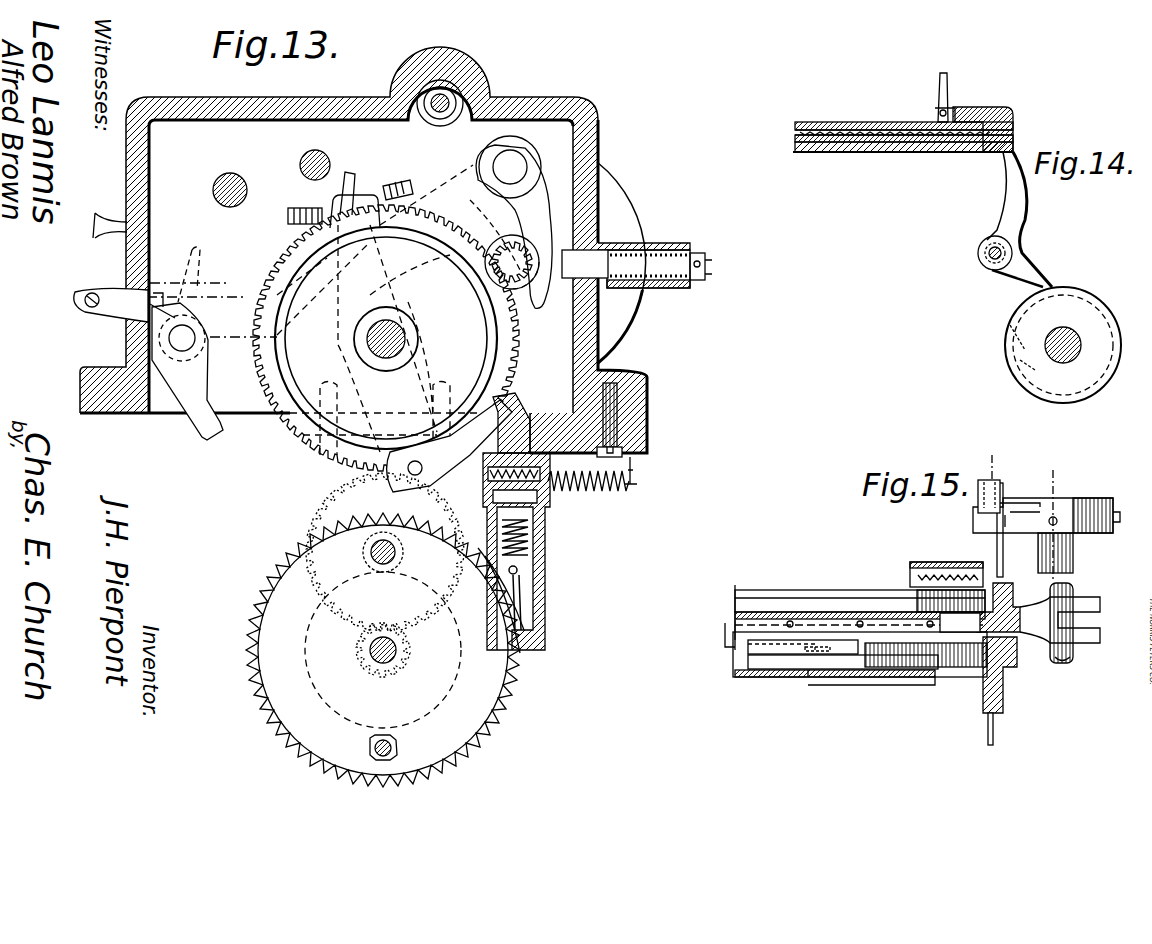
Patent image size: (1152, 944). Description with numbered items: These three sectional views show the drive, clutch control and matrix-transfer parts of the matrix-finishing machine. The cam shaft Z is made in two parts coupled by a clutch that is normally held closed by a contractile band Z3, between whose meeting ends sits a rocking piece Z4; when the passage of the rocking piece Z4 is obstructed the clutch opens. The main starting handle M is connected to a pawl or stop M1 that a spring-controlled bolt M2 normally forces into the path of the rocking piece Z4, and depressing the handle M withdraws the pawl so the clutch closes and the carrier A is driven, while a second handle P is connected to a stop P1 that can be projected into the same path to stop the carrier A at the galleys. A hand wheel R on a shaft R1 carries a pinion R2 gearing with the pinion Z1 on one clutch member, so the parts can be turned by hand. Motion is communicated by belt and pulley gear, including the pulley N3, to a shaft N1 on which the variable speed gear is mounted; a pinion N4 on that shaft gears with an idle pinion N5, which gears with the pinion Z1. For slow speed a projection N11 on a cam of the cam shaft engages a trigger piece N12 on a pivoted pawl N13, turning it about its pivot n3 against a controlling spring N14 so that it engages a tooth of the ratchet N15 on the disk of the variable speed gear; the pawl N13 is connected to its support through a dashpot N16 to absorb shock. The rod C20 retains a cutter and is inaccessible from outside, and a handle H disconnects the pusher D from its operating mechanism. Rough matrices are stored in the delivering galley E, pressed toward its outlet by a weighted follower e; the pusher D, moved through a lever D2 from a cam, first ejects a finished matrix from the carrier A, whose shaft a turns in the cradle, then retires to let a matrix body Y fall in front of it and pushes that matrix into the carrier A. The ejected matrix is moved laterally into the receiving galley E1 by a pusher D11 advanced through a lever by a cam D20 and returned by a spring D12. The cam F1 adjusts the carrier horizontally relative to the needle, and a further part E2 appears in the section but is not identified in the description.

In FIG. 13, the handle H is at (100, 225).
In FIG. 13, the rod C20 is at (450, 100).
In FIG. 13, the pivot n3 is at (640, 448).
In FIG. 13, the pawl or stop M1 is at (605, 290).
In FIG. 13, the spring-controlled bolt M2 is at (705, 267).
In FIG. 13, the main starting handle M is at (80, 303).
In FIG. 13, the hand wheel R is at (628, 200).
In FIG. 13, the shaft R1 is at (520, 262).
In FIG. 13, the pinion R2 is at (535, 258).
In FIG. 13, the rocking piece Z4 is at (352, 185).
In FIG. 13, the pinion Z1 is at (307, 443).
In FIG. 13, the contractile band Z3 is at (277, 415).
In FIG. 13, the cam shaft Z is at (387, 318).
In FIG. 14, the cam shaft Z is at (1067, 340).
In FIG. 15, the cam shaft Z is at (1073, 555).
In FIG. 13, the pawl or stop P1 is at (198, 430).
In FIG. 13, the handle P is at (200, 264).
In FIG. 13, the projection N11 is at (485, 395).
In FIG. 13, the trigger piece N12 is at (527, 411).
In FIG. 13, the dashpot device N16 is at (545, 548).
In FIG. 13, the pivoted pawl or stop N13 is at (560, 497).
In FIG. 13, the controlling spring N14 is at (632, 486).
In FIG. 13, the pulley N3 is at (263, 680).
In FIG. 13, the pinion N4 is at (366, 657).
In FIG. 13, the shaft N1 is at (397, 653).
In FIG. 13, the idle pinion N5 is at (360, 552).
In FIG. 13, the ratchet N15 is at (520, 664).
In FIG. 14, the bar E2 is at (890, 122).
In FIG. 14, the matrix body Y is at (978, 100).
In FIG. 15, the matrix body Y is at (1015, 660).
In FIG. 14, the lever D2 is at (1016, 126).
In FIG. 14, the cam D20 is at (1012, 328).
In FIG. 15, the cam D20 is at (1100, 508).
In FIG. 15, the receiving galley E1 is at (893, 598).
In FIG. 15, the cam F1 is at (725, 638).
In FIG. 15, the delivering galley E is at (944, 670).
In FIG. 15, the weighted follower e is at (820, 650).
In FIG. 15, the spring D12 is at (975, 565).
In FIG. 15, the pusher D11 is at (1004, 545).
In FIG. 15, the pusher D is at (995, 725).
In FIG. 15, the carrier A is at (1060, 623).
In FIG. 15, the shaft a is at (1072, 663).